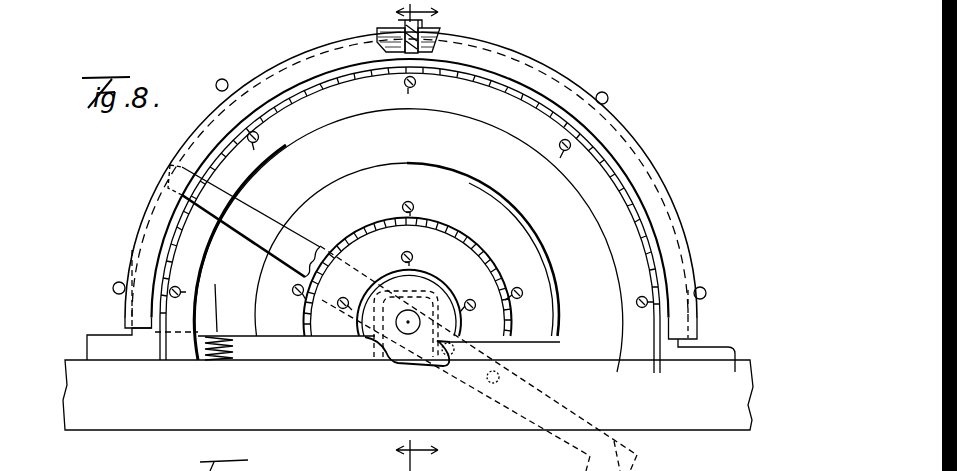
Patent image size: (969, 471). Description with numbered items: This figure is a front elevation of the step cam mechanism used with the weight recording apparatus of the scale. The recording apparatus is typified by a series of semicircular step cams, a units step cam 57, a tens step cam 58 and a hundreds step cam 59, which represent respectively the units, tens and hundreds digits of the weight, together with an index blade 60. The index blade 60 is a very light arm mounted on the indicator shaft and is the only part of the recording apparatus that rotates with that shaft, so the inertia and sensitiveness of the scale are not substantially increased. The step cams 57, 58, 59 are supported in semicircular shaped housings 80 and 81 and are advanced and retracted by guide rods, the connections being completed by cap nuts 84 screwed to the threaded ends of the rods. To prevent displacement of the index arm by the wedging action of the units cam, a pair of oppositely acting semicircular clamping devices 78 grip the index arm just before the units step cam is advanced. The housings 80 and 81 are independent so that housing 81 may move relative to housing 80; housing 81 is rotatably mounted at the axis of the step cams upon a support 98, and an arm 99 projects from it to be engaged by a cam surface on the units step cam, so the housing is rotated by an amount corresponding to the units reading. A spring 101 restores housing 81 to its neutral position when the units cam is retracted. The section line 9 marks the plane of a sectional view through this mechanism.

The section line 9- 9 is at (423, 237).
The semicircular clamping devices 78 is at (519, 58).
The units step cam 57 is at (330, 80).
The housing 80 is at (632, 333).
The housing 81 is at (530, 252).
The tens step cam 58 is at (456, 234).
The hundreds step cam 59 is at (443, 288).
The cap nuts 84 is at (517, 288).
The index blade 60 is at (244, 240).
The arm 99 is at (224, 297).
The spring 101 is at (236, 348).
The support 98 is at (375, 374).